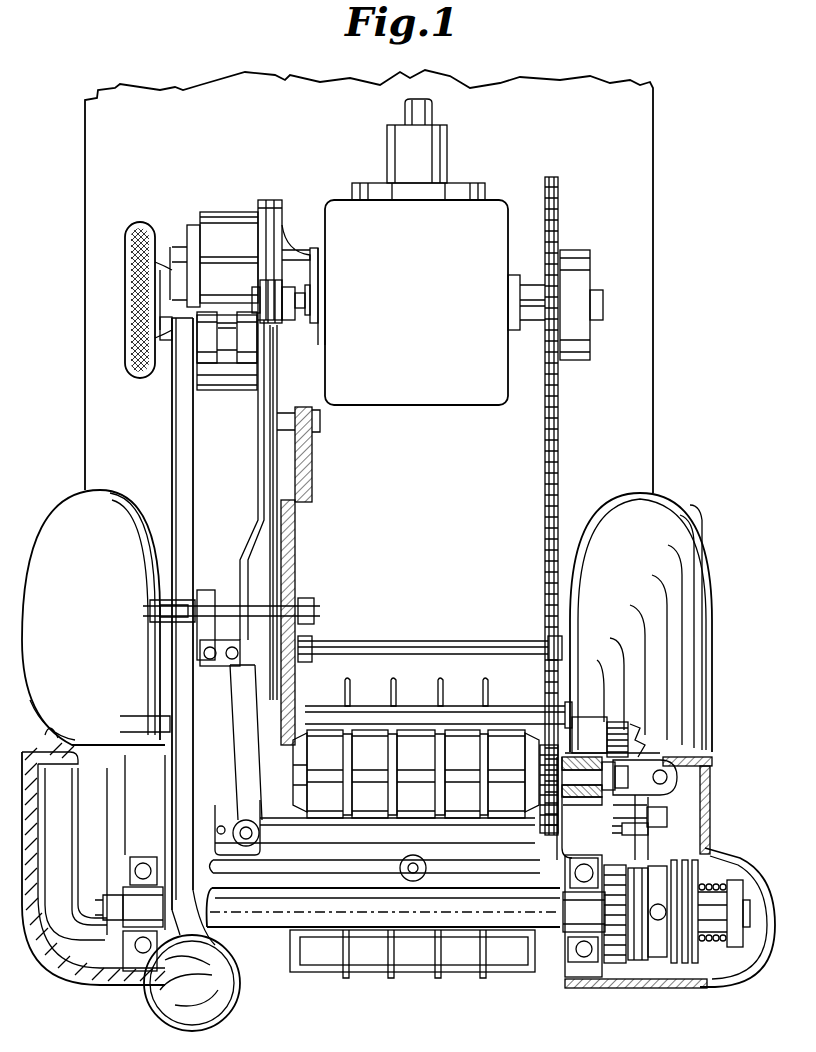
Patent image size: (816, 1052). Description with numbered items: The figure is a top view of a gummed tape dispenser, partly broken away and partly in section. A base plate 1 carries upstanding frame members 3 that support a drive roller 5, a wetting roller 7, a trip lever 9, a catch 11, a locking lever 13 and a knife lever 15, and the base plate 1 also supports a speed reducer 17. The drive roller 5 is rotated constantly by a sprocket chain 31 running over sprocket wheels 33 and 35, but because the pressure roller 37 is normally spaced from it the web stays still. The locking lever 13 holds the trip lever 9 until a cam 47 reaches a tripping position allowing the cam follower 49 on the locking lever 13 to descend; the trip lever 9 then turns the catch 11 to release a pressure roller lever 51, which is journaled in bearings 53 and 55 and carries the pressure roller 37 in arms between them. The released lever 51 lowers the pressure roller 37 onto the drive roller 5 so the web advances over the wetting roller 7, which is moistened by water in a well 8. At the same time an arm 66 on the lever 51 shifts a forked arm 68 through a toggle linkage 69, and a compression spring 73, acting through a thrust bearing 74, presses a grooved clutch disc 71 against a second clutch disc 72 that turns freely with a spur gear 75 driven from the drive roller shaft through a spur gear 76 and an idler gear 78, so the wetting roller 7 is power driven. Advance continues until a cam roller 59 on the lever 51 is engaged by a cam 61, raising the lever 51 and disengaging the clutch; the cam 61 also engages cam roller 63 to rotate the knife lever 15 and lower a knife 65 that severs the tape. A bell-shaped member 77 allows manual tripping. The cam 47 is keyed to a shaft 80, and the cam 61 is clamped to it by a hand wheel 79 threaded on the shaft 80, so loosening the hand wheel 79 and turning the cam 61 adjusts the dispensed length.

The base plate 1 is at (650, 405).
The frame members 3 is at (62, 520).
The drive roller 5 is at (372, 706).
The wetting roller 7 is at (376, 955).
The well 8 is at (458, 972).
The trip lever 9 is at (200, 800).
The catch 11 is at (207, 590).
The locking lever 13 is at (241, 510).
The knife lever 15 is at (270, 460).
The speed reducer 17 is at (440, 402).
The sprocket chain 31 is at (545, 500).
The sprocket wheel 33 is at (540, 740).
The sprocket wheel 35 is at (585, 342).
The pressure roller 37 is at (466, 822).
The cam 47 is at (272, 210).
The cam follower 49 is at (270, 284).
The pressure roller lever 51 is at (168, 440).
The bearing 53 is at (125, 938).
The bearing 55 is at (580, 925).
The cam roller 59 is at (212, 356).
The cam 61 is at (228, 212).
The cam roller 63 is at (246, 356).
The knife 65 is at (512, 860).
The arm 66 is at (592, 826).
The forked arm 68 is at (665, 795).
The toggle linkage 69 is at (667, 815).
The clutch disc 71 is at (658, 958).
The clutch disc 72 is at (640, 960).
The compression spring 73 is at (710, 884).
The thrust bearing 74 is at (698, 945).
The spur gear 75 is at (618, 960).
The spur gear 76 is at (636, 748).
The bell-shaped member 77 is at (240, 1000).
The idler gear 78 is at (640, 850).
The hand wheel 79 is at (130, 372).
The shaft 80 is at (318, 300).